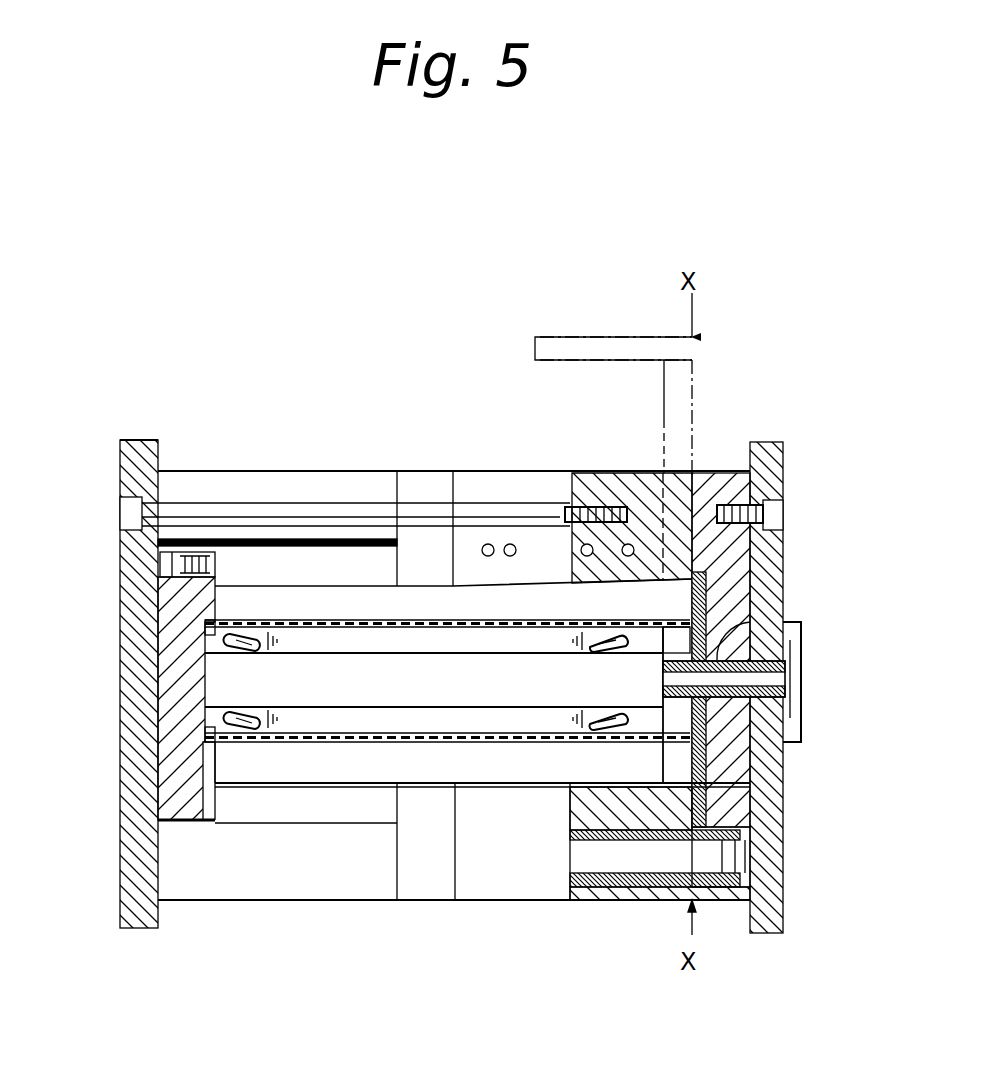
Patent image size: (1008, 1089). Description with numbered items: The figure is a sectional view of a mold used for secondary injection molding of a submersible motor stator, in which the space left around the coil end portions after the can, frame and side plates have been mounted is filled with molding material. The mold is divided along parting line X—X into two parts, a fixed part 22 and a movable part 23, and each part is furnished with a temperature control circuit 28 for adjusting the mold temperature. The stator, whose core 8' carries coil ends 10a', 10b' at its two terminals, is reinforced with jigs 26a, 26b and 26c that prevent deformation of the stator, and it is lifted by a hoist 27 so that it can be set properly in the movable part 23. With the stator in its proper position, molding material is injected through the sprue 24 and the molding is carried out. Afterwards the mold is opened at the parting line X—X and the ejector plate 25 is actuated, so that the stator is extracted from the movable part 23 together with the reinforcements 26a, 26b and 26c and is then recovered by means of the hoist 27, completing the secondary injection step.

The fixed part 22 is at (733, 777).
The movable part 23 is at (513, 842).
The sprue 24 is at (778, 612).
The ejector plate 25 is at (178, 728).
The jig 26a is at (574, 508).
The jig 26b is at (326, 610).
The jig 26c is at (426, 665).
The hoist 27 is at (614, 348).
The temperature control circuit 28 is at (588, 544).
The lower bearing 8' is at (645, 853).
The right roller bearing 10a' is at (606, 796).
The left roller bearing 10b' is at (231, 796).